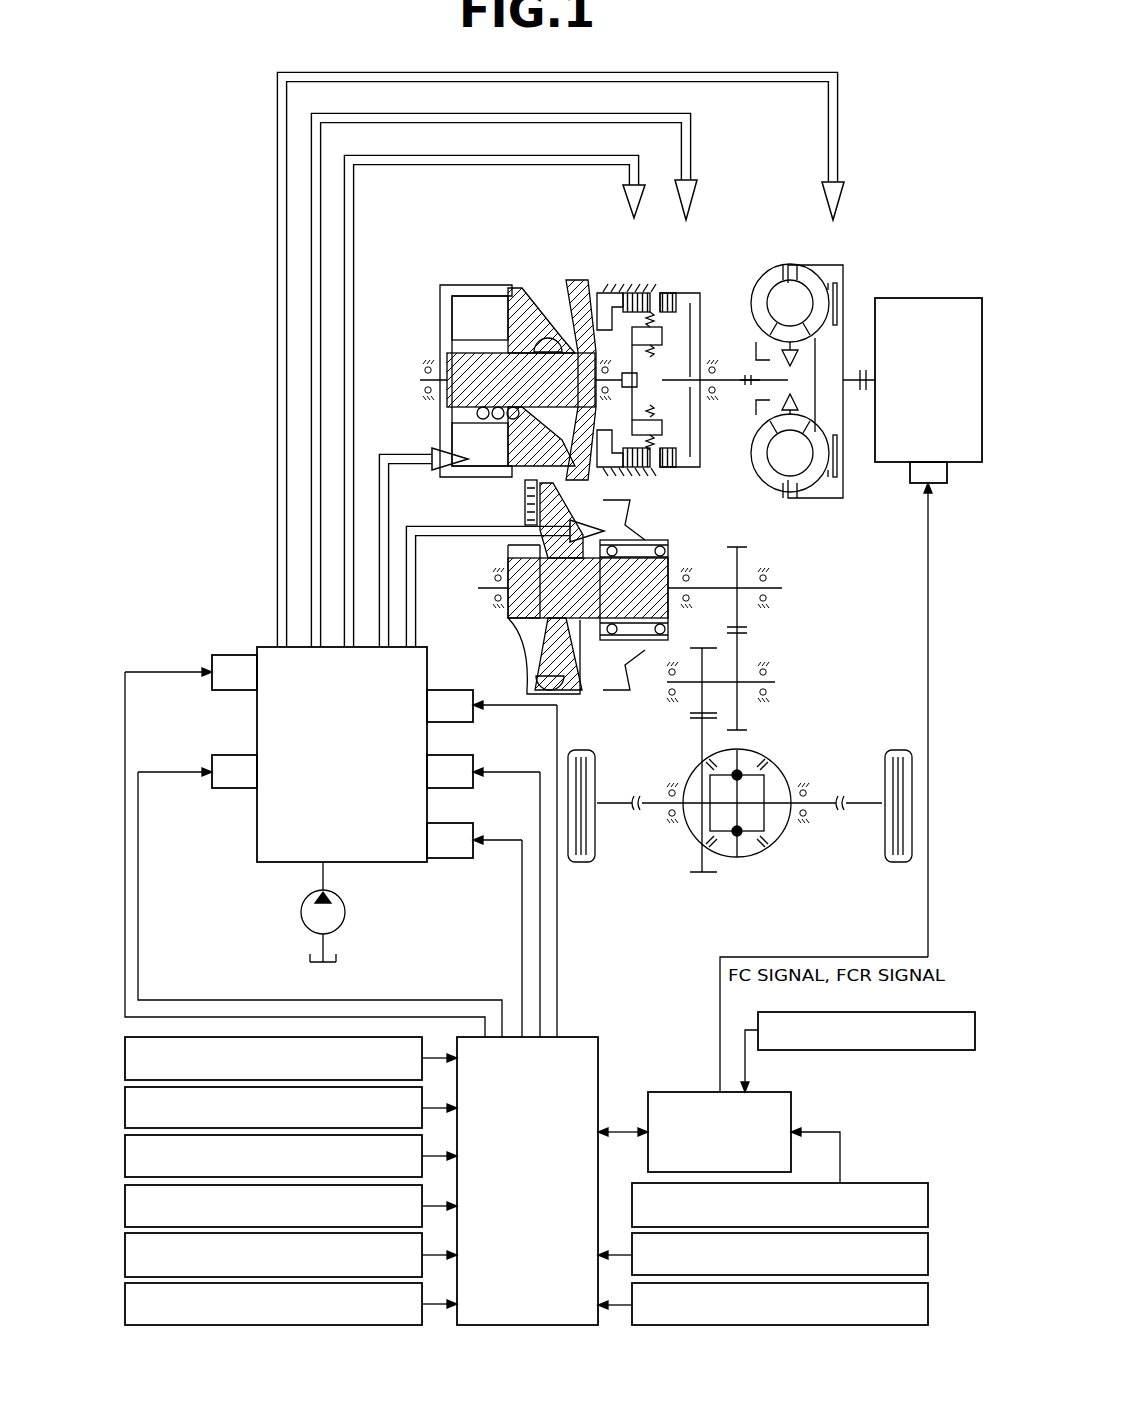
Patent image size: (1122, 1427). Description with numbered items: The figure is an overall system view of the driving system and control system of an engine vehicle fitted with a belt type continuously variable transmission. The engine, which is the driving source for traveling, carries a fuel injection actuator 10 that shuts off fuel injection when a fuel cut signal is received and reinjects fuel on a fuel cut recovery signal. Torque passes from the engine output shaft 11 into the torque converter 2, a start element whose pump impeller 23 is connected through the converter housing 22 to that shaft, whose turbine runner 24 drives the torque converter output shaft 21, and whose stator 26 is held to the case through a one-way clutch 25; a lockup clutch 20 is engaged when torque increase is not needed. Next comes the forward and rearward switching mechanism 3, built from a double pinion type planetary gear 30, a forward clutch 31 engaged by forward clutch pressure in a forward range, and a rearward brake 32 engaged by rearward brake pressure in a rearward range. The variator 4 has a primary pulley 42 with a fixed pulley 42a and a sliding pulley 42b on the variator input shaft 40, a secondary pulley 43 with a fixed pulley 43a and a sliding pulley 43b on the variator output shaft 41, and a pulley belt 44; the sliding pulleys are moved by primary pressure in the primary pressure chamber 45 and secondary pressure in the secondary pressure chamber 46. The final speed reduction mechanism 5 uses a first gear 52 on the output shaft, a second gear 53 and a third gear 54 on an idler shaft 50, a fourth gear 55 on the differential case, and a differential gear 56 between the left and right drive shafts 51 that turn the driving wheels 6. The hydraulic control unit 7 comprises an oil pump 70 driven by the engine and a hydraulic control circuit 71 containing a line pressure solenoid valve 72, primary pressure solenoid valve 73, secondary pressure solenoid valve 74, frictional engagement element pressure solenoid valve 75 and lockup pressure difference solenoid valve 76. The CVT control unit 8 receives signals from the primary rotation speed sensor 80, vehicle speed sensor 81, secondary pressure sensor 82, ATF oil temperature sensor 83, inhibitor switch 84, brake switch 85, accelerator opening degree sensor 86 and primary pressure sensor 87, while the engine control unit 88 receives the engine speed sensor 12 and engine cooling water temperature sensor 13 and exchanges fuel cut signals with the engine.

The torque converter 2 is at (809, 363).
The forward and rearward switching mechanism 3 is at (649, 350).
The variator 4 is at (480, 327).
The final speed reduction mechanism 5 is at (739, 691).
The driving wheels 6 is at (583, 862).
The hydraulic control unit 7 is at (225, 615).
The CVT control unit 8 is at (583, 1035).
The fuel injection actuator 10 is at (947, 475).
The engine output shaft 11 is at (862, 383).
The engine speed sensor 12 is at (942, 1050).
The engine cooling water temperature sensor 13 is at (928, 1205).
The lockup clutch 20 is at (840, 320).
The torque converter output shaft 21 is at (738, 385).
The converter housing 22 is at (830, 265).
The pump impeller 23 is at (770, 290).
The turbine runner 24 is at (815, 478).
The one-way clutch 25 is at (790, 360).
The stator 26 is at (790, 330).
The double pinion type planetary gear 30 is at (650, 435).
The forward clutch 31 is at (676, 300).
The rearward brake 32 is at (638, 290).
The variator input shaft 40 is at (470, 362).
The variator output shaft 41 is at (708, 575).
The primary pulley 42 is at (436, 292).
The fixed pulley 42a is at (572, 295).
The sliding pulley 42b is at (535, 295).
The secondary pulley 43 is at (548, 609).
The fixed pulley 43a is at (525, 643).
The sliding pulley 43b is at (553, 690).
The pulley belt 44 is at (520, 497).
The primary pressure chamber 45 is at (474, 300).
The secondary pressure chamber 46 is at (595, 668).
The idler shaft 50 is at (750, 685).
The drive shafts 51 is at (620, 803).
The first gear 52 is at (740, 550).
The second gear 53 is at (745, 632).
The third gear 54 is at (700, 650).
The final gear 55 is at (700, 735).
The differential gear 56 is at (782, 770).
The oil pump 70 is at (303, 915).
The hydraulic control circuit 71 is at (257, 857).
The line pressure solenoid valve 72 is at (440, 858).
The primary pressure solenoid valve 73 is at (440, 788).
The secondary pressure solenoid valve 74 is at (440, 722).
The frictional engagement element pressure solenoid valve 75 is at (235, 788).
The lockup pressure difference solenoid valve 76 is at (235, 690).
The primary rotation speed sensor 80 is at (125, 1060).
The vehicle speed sensor 81 is at (125, 1110).
The secondary pressure sensor 82 is at (125, 1158).
The ATF oil temperature sensor 83 is at (125, 1208).
The inhibitor switch 84 is at (125, 1257).
The brake switch 85 is at (125, 1306).
The accelerator opening degree sensor 86 is at (928, 1252).
The primary pressure sensor 87 is at (928, 1302).
The engine control unit 88 is at (791, 1100).